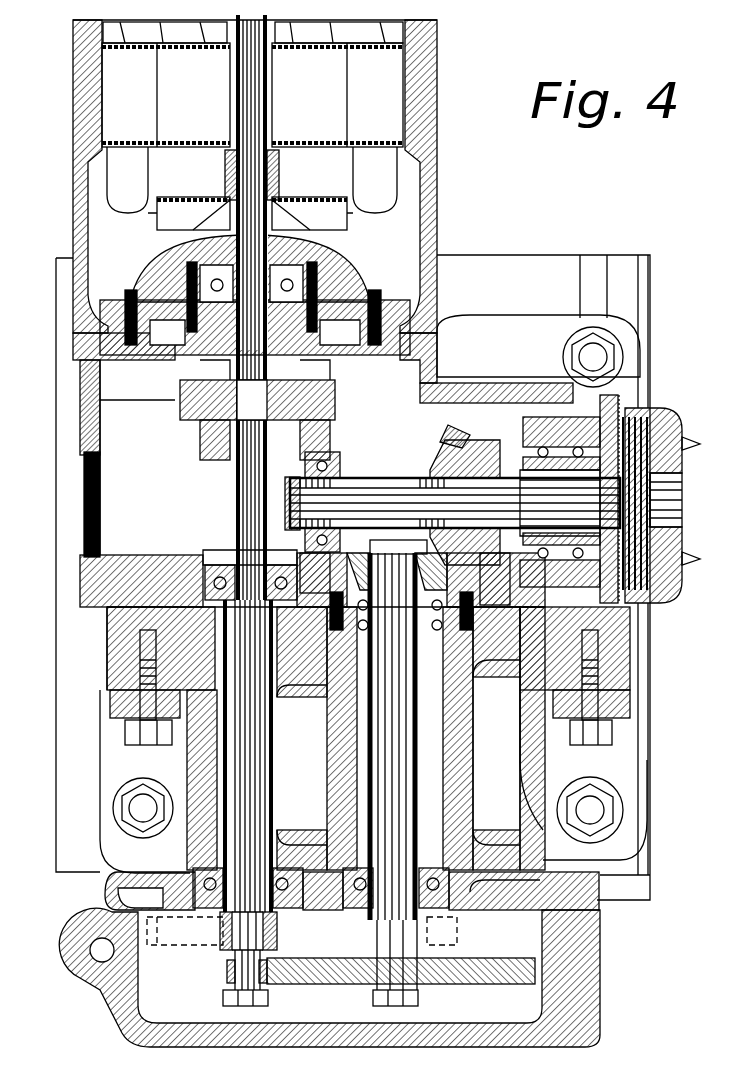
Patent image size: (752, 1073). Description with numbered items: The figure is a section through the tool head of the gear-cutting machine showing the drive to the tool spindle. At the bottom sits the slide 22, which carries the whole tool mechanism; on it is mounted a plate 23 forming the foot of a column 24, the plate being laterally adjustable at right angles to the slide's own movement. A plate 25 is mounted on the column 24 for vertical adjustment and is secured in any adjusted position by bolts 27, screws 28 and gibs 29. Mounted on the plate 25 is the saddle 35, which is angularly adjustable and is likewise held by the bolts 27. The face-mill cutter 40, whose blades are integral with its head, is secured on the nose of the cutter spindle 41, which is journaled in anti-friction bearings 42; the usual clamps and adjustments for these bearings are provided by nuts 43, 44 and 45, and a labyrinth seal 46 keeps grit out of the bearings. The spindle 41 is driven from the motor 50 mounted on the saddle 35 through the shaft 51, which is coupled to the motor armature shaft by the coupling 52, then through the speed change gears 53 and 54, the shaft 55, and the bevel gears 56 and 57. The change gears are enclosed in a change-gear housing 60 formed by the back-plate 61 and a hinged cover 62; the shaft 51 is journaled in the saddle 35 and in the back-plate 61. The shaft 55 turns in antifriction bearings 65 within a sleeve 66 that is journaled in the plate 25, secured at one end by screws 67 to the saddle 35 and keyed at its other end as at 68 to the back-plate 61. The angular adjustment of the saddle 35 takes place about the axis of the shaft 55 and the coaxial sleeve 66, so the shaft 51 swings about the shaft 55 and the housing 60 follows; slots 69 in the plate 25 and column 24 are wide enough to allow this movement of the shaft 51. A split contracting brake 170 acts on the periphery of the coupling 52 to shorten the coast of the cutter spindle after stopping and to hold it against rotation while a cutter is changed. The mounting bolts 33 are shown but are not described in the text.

The slide 22 is at (640, 862).
The plate 23 is at (620, 765).
The column 24 is at (545, 773).
The plate 25 is at (110, 630).
The bolts 27 is at (125, 740).
The screws 28 is at (140, 695).
The gibs 29 is at (140, 708).
The mounting bolt 33 is at (594, 357).
The saddle 35 is at (415, 345).
The face-mill cutter 40 is at (682, 468).
The cutter spindle 41 is at (413, 478).
The anti-friction bearings 42 is at (340, 468).
The nut 43 is at (287, 481).
The nut 44 is at (497, 465).
The nut 45 is at (600, 418).
The labyrinth seal 46 is at (614, 405).
The motor 50 is at (440, 170).
The shaft 51 is at (268, 757).
The coupling 52 is at (202, 424).
The speed change gear 53 is at (227, 972).
The speed change gear 54 is at (503, 985).
The shaft 55 is at (383, 783).
The bevel gear 56 is at (365, 565).
The bevel gear 57 is at (455, 440).
The change-gear housing 60 is at (302, 963).
The back-plate 61 is at (107, 893).
The hinged cover 62 is at (115, 1038).
The antifriction bearing 65 is at (205, 563).
The sleeve 66 is at (473, 765).
The screws 67 is at (494, 575).
The key 68 is at (480, 895).
The slots 69 is at (292, 650).
The brake 170 is at (337, 400).